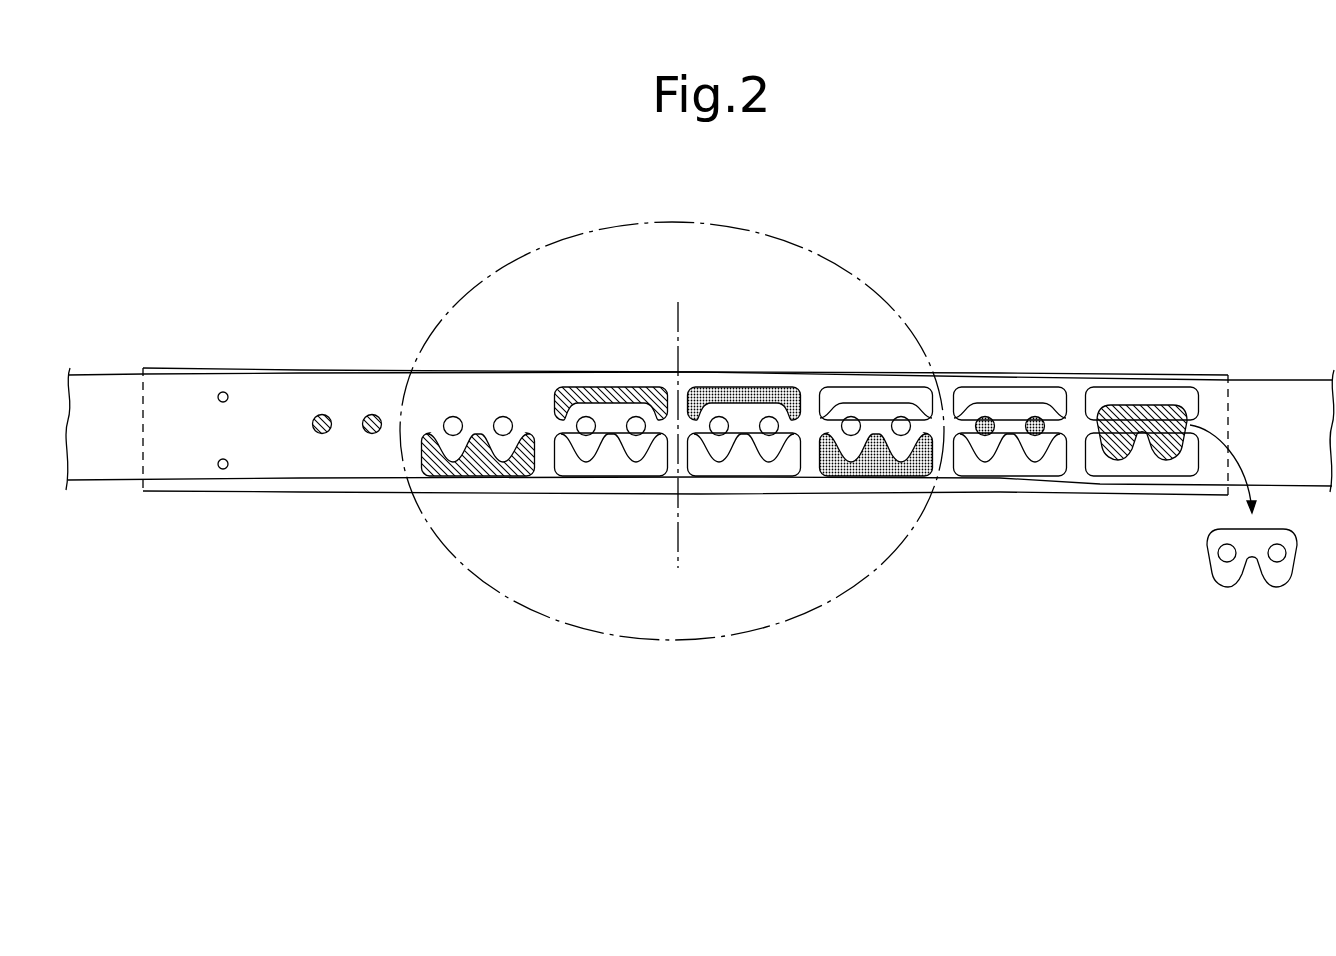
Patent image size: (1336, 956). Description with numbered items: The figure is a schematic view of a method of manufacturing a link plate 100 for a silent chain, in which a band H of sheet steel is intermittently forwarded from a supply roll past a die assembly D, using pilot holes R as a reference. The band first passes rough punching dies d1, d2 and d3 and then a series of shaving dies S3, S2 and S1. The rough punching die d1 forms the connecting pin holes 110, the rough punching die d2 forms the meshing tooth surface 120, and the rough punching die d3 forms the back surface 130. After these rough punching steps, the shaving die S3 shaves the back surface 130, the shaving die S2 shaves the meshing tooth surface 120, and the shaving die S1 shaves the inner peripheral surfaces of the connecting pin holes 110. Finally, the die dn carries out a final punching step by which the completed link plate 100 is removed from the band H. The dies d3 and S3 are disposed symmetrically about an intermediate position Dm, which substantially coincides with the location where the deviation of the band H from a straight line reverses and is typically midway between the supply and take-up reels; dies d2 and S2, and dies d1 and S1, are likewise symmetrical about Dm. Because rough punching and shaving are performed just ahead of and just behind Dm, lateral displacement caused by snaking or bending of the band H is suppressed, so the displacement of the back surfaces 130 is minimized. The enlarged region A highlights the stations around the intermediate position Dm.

The band H is at (93, 482).
The die assembly D is at (158, 494).
The pilot holes R is at (223, 391).
The rough punching die d1 is at (322, 414).
The connecting pin holes 110 is at (455, 416).
The rough punching die d2 is at (530, 432).
The rough punching die d3 is at (617, 398).
The meshing tooth surface 120 is at (580, 445).
The shaving die S3 is at (742, 398).
The back surface 130 is at (870, 404).
The shaving die S2 is at (867, 465).
The shaving die S1 is at (1035, 418).
The die dn is at (1138, 408).
The link plate 100 is at (1208, 562).
The intermediate position Dm is at (677, 419).
The enlarged region A is at (858, 275).